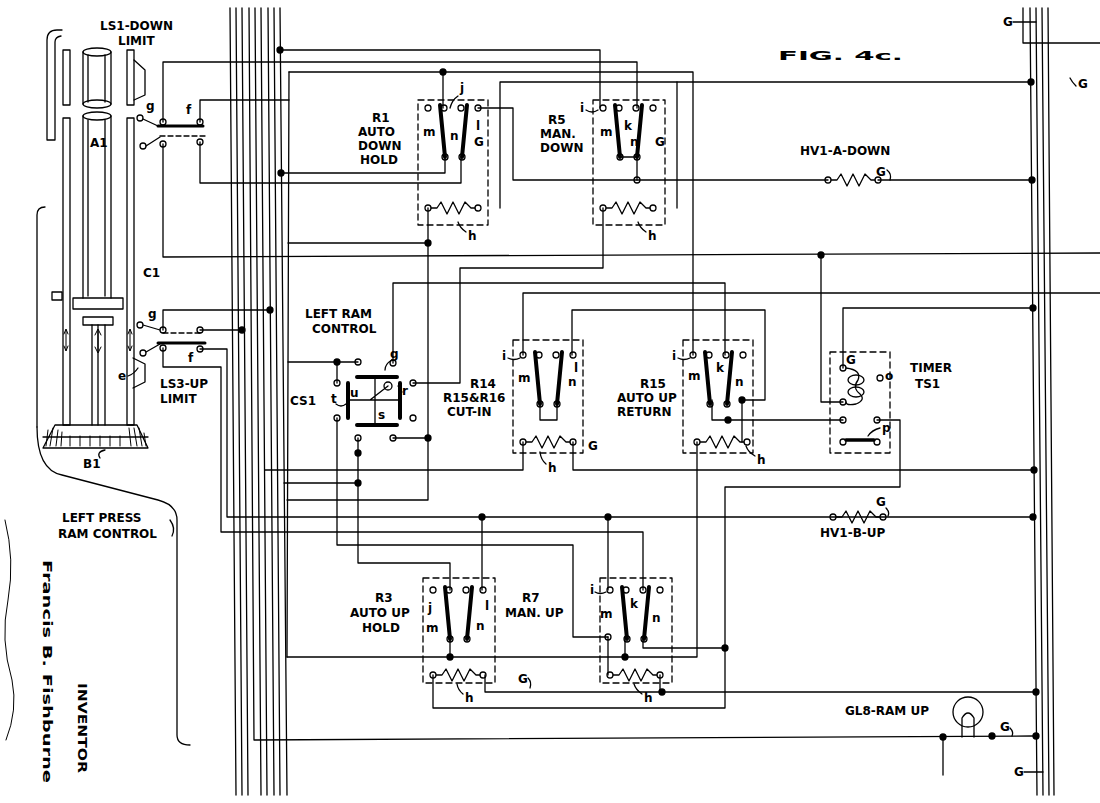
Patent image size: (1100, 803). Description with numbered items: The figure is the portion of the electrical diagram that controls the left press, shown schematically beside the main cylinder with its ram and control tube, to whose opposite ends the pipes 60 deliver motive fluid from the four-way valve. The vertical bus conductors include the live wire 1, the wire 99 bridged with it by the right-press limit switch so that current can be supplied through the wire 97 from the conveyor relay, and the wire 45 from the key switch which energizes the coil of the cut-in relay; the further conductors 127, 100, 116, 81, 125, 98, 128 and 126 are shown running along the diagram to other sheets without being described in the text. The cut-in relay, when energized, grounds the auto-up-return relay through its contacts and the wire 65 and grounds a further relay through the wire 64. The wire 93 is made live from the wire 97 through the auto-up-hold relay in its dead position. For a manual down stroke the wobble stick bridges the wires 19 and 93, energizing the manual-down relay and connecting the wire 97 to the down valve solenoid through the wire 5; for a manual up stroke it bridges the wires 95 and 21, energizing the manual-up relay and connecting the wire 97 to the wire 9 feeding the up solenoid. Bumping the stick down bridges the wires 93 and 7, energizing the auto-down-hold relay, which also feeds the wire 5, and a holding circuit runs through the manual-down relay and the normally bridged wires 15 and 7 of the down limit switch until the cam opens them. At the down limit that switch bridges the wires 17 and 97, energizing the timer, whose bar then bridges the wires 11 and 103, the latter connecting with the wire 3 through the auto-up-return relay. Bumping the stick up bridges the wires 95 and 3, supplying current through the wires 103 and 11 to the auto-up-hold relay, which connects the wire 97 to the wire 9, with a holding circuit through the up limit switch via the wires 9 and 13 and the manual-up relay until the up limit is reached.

The pipes 60 is at (47, 106).
The conductor 127 is at (230, 16).
The conductor 100 is at (249, 28).
The wire 99 is at (236, 40).
The conductor 116 is at (242, 52).
The conductor 81 is at (255, 16).
The wire 45 is at (261, 29).
The live wire 1 is at (268, 40).
The conductor 125 is at (274, 44).
The wire 97 is at (330, 46).
The wire 95 is at (294, 74).
The wire 7 is at (202, 108).
The wire 15 is at (165, 116).
The wire 17 is at (164, 148).
The wire 5 is at (492, 100).
The wire 19 is at (460, 272).
The wire 3 is at (403, 284).
The wire 9 is at (218, 354).
The wire 13 is at (165, 354).
The wire 21 is at (600, 636).
The wire 93 is at (287, 779).
The wire 65 is at (662, 316).
The wire 103 is at (779, 419).
The wire 11 is at (436, 718).
The wire 64 is at (898, 293).
The conductor 98 is at (1023, 12).
The conductor 128 is at (1048, 10).
The conductor 126 is at (1036, 20).